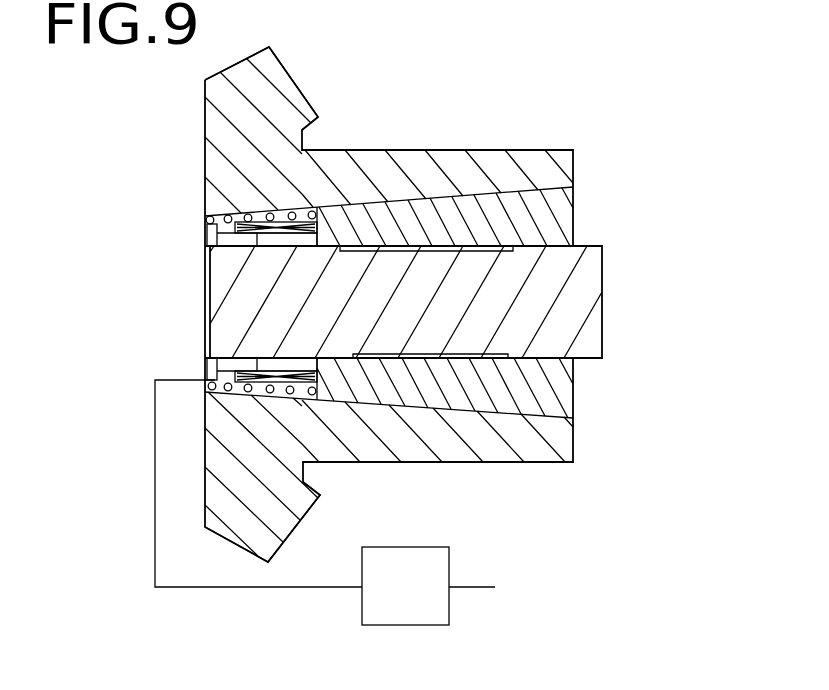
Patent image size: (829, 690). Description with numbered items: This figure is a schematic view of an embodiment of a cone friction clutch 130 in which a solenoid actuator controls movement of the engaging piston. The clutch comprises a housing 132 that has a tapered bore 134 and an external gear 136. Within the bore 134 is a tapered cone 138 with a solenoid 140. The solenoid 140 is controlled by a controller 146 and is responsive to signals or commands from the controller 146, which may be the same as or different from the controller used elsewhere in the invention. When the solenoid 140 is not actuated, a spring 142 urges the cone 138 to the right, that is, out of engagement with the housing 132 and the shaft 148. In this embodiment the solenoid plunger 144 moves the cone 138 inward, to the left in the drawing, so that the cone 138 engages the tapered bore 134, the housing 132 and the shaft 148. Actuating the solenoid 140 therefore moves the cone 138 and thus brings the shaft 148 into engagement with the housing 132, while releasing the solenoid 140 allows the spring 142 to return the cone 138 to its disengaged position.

The cone friction clutch 130 is at (556, 114).
The housing 132 is at (450, 155).
The tapered bore 134 is at (214, 231).
The external gear 136 is at (303, 96).
The tapered cone 138 is at (570, 217).
The solenoid 140 is at (250, 378).
The spring 142 is at (206, 219).
The solenoid plunger 144 is at (267, 366).
The controller 146 is at (413, 547).
The shaft 148 is at (594, 305).